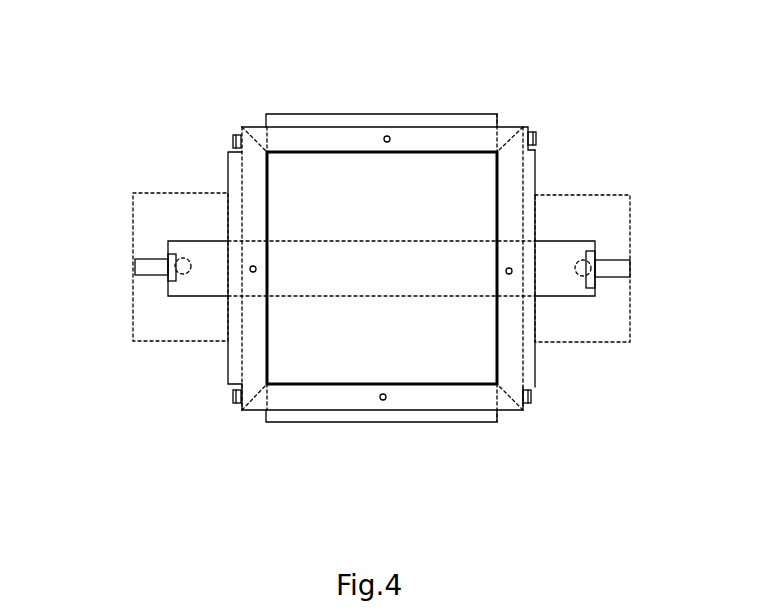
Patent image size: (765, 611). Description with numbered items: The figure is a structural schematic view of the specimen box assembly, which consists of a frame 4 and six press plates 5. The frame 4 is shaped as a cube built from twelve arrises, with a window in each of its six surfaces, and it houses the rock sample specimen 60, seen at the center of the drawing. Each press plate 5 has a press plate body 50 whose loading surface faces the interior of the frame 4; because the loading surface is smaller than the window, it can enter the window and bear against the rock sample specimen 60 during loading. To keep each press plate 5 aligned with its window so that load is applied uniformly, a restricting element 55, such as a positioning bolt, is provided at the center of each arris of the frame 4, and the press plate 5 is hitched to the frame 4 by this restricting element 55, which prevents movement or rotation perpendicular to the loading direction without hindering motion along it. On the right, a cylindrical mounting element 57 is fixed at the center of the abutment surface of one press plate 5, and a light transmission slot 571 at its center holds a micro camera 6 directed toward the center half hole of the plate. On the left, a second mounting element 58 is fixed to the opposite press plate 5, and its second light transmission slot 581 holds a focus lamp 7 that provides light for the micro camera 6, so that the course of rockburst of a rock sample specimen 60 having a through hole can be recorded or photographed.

The frame 4 is at (238, 137).
The press plate 5 is at (85, 157).
The micro camera 6 is at (585, 270).
The focus lamp 7 is at (178, 264).
The press plate body 50 is at (358, 118).
The restricting element 55 is at (537, 135).
The mounting element 57 is at (613, 300).
The second mounting element 58 is at (177, 327).
The rock sample specimen 60 is at (413, 357).
The light transmission slot 571 is at (555, 288).
The second light transmission slot 581 is at (192, 287).